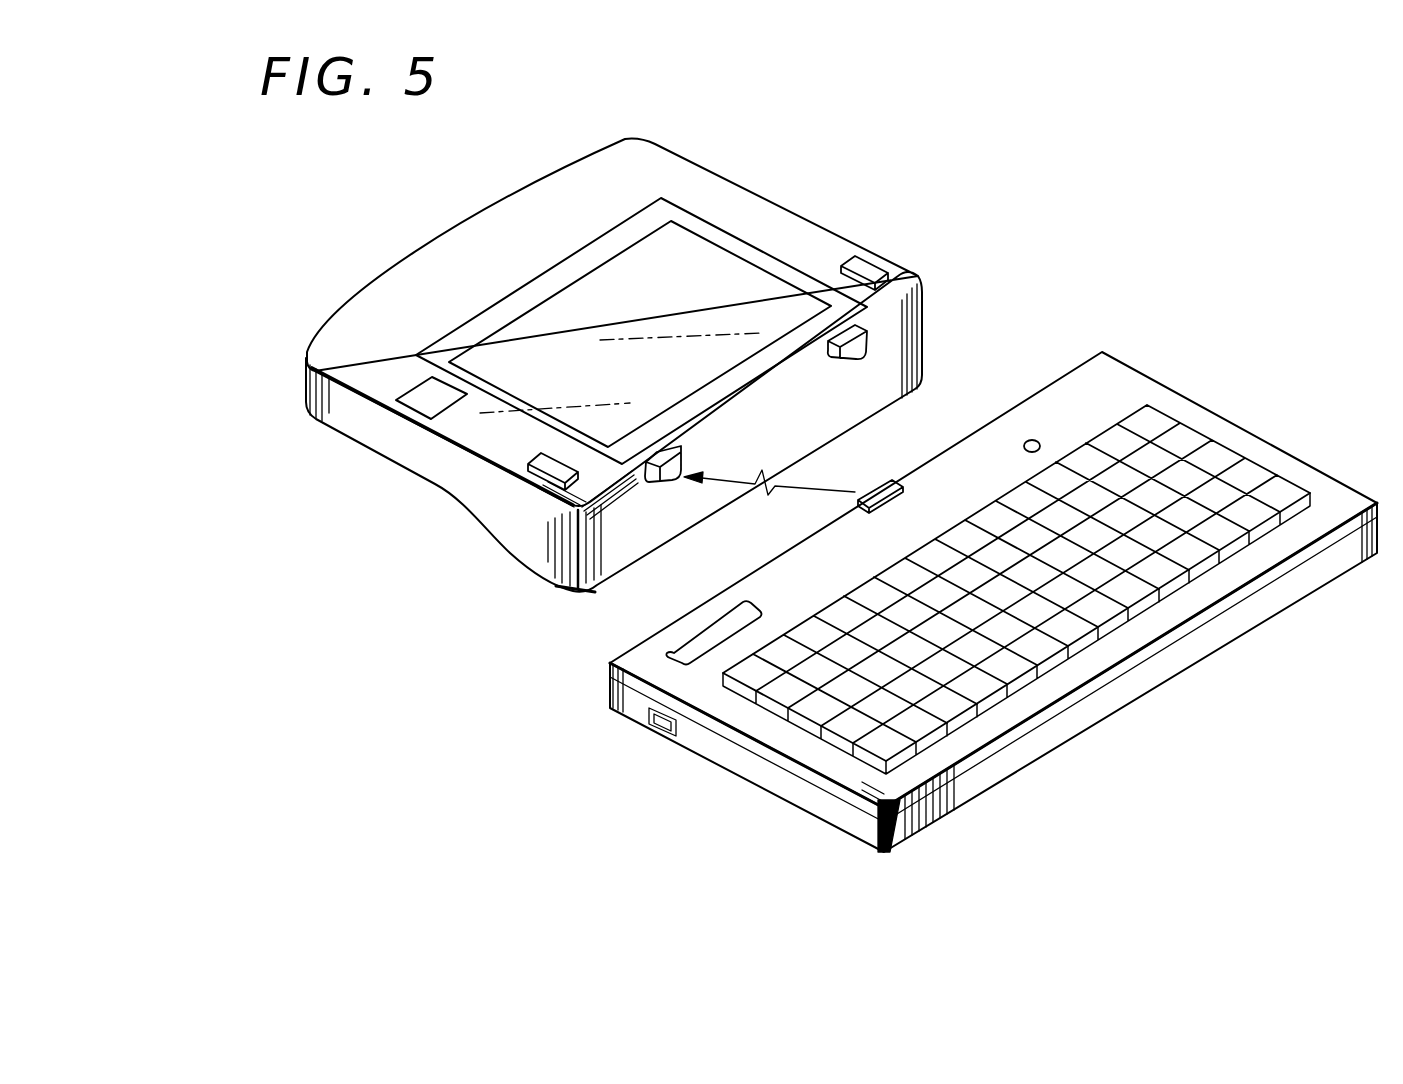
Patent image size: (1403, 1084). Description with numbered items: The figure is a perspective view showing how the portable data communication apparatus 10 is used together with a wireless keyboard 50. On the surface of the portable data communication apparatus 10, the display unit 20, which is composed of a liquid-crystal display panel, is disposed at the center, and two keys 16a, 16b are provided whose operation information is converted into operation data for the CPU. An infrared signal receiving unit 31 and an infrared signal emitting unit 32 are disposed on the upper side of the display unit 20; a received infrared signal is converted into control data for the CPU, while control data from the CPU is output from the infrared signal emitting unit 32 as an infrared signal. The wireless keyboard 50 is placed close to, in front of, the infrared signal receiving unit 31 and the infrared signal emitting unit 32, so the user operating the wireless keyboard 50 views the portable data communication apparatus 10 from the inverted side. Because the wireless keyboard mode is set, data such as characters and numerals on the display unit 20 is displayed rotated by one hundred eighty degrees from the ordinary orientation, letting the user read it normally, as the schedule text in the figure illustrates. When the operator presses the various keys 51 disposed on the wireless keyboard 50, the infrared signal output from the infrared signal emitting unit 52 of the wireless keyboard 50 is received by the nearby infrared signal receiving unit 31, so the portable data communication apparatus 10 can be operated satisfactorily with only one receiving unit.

The portable data communication apparatus 10 is at (810, 215).
The display unit 20 is at (728, 252).
The key 16a is at (538, 492).
The key 16b is at (881, 265).
The infrared signal receiving unit 31 is at (665, 467).
The infrared signal emitting unit 32 is at (867, 344).
The wireless keyboard 50 is at (1213, 408).
The keys 51 is at (1138, 583).
The infrared signal emitting unit 52 is at (882, 486).